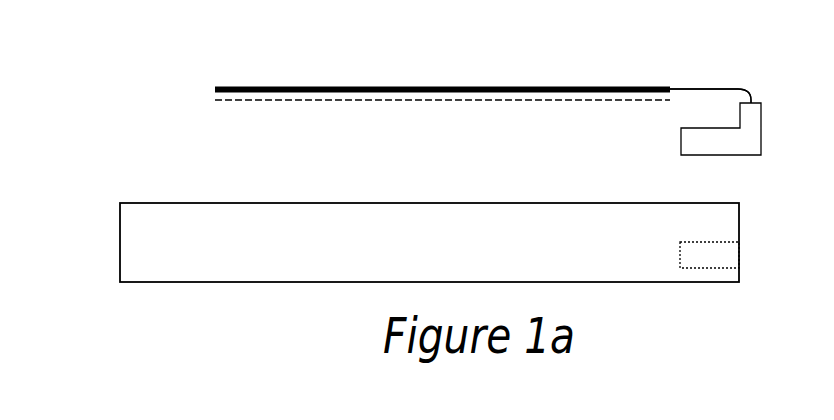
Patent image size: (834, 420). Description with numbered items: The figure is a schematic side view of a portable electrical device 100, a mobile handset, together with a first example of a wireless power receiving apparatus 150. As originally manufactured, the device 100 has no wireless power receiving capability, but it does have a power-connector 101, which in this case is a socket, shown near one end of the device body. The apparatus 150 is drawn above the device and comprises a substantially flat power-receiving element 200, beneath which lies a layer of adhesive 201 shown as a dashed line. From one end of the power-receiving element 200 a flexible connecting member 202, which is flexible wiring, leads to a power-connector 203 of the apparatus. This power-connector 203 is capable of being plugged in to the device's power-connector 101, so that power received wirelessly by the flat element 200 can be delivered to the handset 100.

The portable electrical device 100 is at (120, 203).
The power-connector 101 is at (739, 253).
The wireless power receiving apparatus 150 is at (450, 89).
The power-receiving element 200 is at (308, 86).
The layer of adhesive 201 is at (230, 102).
The flexible connecting member 202 is at (722, 89).
The power-connector 203 is at (761, 138).